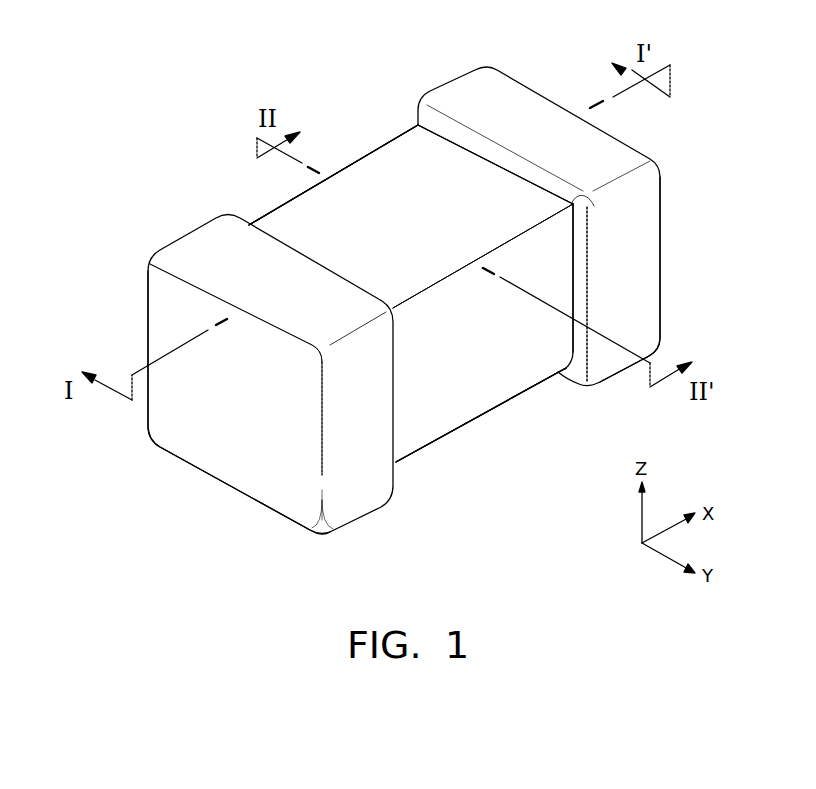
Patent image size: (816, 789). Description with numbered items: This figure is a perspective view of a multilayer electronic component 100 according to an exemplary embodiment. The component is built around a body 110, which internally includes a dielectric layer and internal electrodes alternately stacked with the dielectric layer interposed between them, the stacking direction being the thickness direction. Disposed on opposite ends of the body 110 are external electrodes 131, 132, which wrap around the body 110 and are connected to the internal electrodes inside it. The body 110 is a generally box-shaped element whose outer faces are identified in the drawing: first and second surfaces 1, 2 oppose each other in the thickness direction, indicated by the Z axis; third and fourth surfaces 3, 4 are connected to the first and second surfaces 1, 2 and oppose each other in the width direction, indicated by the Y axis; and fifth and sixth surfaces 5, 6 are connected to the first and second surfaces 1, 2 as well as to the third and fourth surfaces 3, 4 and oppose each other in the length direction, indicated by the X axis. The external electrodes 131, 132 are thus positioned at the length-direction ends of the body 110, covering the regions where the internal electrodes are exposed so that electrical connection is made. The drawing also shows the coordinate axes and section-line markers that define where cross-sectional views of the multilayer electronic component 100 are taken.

The multilayer electronic component 100 is at (189, 33).
The body 110 is at (283, 228).
The external electrode 131 is at (207, 247).
The external electrode 132 is at (462, 98).
The first surface 1 is at (448, 395).
The second surface 2 is at (418, 173).
The third surface 3 is at (233, 445).
The fourth surface 4 is at (612, 238).
The fifth surface 5 is at (509, 364).
The sixth surface 6 is at (359, 197).